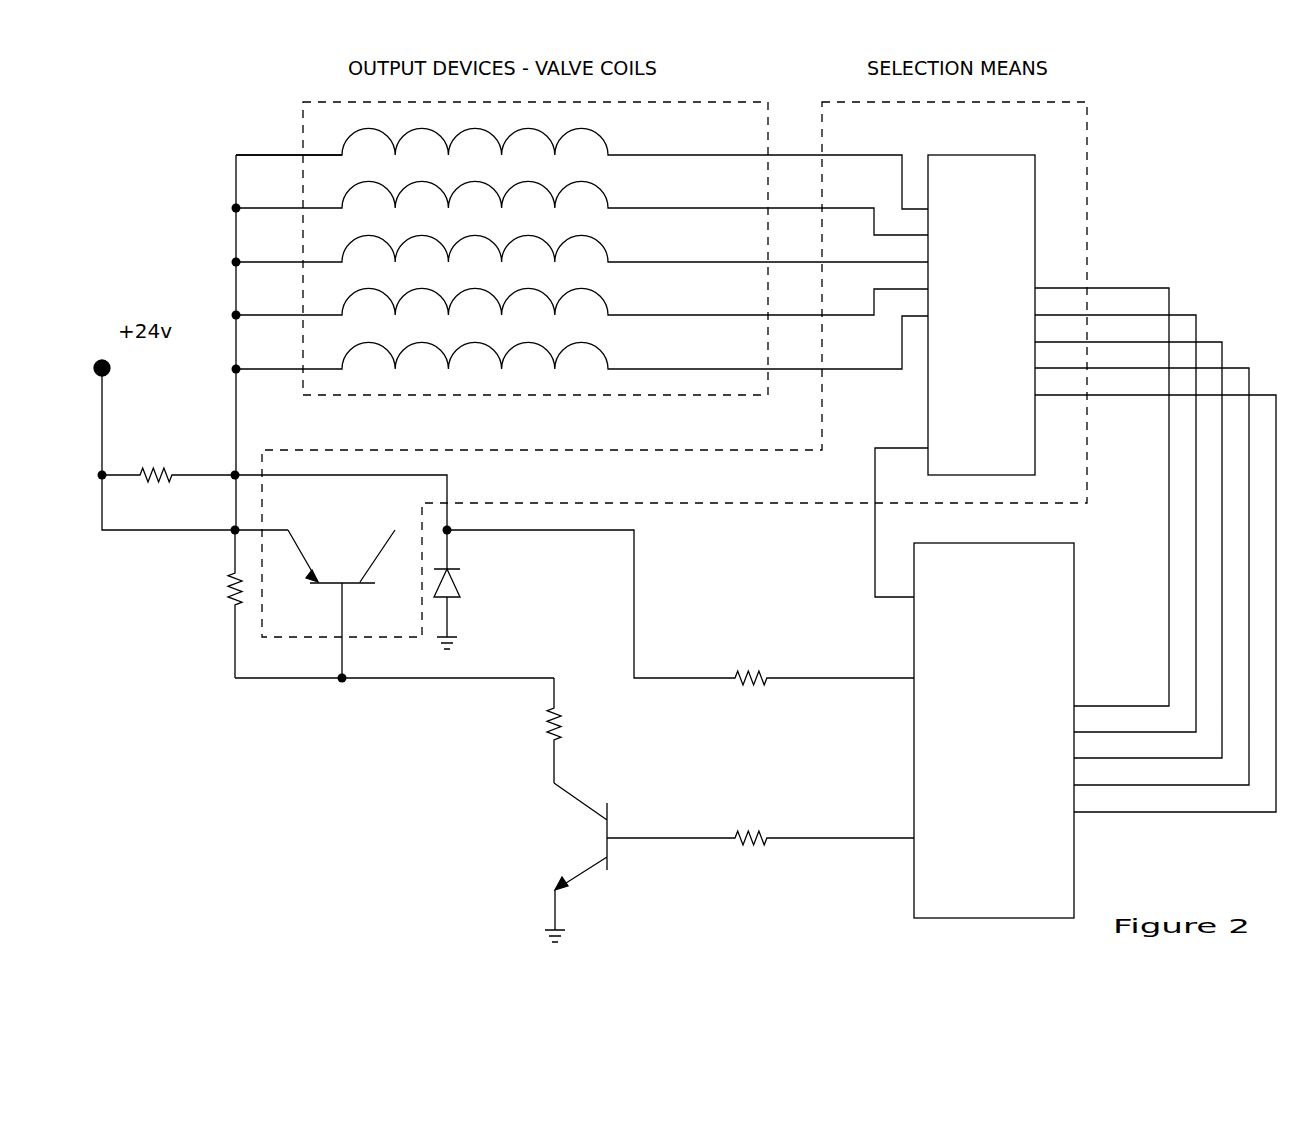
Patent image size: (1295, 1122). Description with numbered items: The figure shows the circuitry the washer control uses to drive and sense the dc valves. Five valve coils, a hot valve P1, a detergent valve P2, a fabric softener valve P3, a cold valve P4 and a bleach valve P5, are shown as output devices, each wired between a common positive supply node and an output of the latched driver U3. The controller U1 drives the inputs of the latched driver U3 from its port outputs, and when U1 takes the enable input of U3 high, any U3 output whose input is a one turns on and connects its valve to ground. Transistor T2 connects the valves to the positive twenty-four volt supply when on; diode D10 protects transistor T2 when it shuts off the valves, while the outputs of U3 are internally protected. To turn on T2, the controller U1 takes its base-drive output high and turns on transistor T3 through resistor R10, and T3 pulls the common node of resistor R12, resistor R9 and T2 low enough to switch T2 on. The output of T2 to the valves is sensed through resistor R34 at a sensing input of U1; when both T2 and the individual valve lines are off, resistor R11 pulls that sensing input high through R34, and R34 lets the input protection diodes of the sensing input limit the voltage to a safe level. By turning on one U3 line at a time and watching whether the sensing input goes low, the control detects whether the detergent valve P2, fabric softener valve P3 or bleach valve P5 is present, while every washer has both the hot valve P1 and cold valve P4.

The hot valve P1 is at (582, 168).
The detergent valve P2 is at (582, 208).
The fabric softener valve P3 is at (582, 248).
The cold valve P4 is at (582, 301).
The bleach valve P5 is at (582, 342).
The latched driver U3 is at (981, 299).
The microcontroller U1 is at (994, 717).
The resistor R11 is at (274, 489).
The resistor R12 is at (217, 604).
The resistor R34 is at (680, 607).
The resistor R9 is at (571, 727).
The resistor R10 is at (760, 829).
The transistor T2 is at (394, 596).
The transistor T3 is at (574, 862).
The diode D10 is at (471, 589).